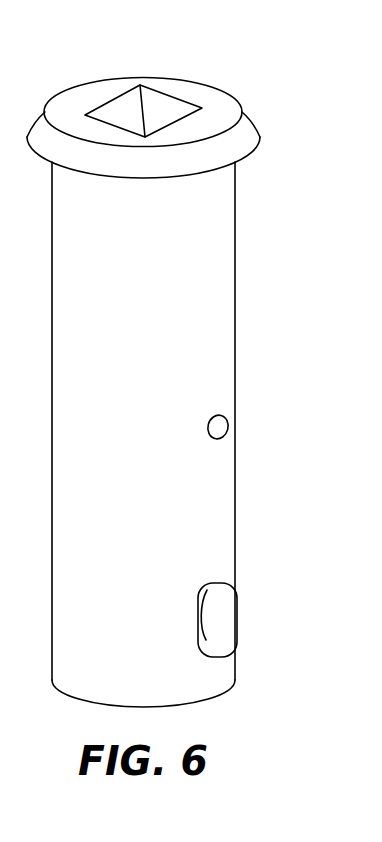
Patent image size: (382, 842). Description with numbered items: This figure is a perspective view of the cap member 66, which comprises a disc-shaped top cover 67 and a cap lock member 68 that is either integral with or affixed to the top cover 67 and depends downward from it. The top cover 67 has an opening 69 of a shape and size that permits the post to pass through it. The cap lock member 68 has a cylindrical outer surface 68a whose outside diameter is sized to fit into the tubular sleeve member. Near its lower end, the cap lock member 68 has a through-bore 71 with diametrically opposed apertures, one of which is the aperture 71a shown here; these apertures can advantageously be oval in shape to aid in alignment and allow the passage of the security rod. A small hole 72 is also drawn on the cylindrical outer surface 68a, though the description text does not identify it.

The cap member 66 is at (258, 241).
The top cover 67 is at (233, 147).
The cap lock member 68 is at (223, 312).
The cylindrical outer surface 68a is at (160, 407).
The opening 69 is at (165, 110).
The through-bore 71 is at (223, 598).
The aperture 71a is at (221, 628).
The hole 72 is at (228, 427).